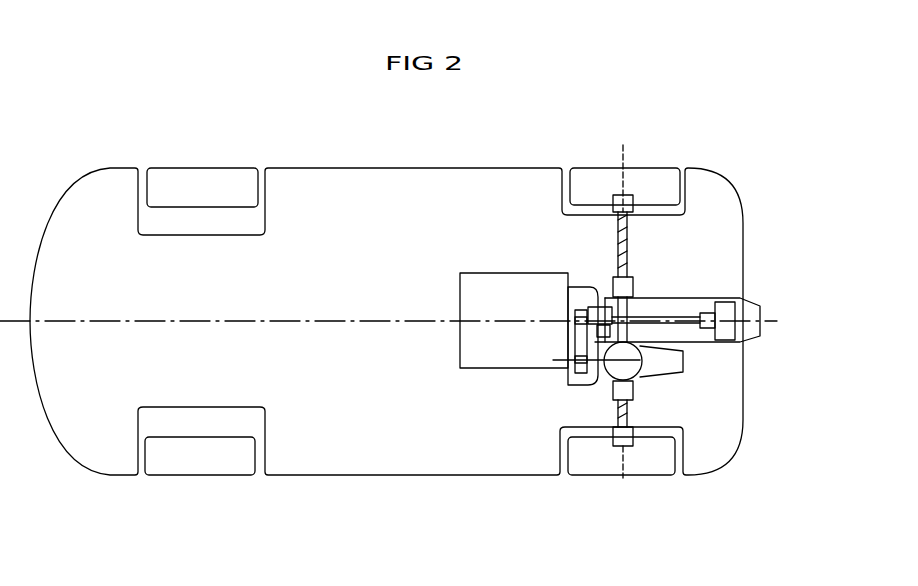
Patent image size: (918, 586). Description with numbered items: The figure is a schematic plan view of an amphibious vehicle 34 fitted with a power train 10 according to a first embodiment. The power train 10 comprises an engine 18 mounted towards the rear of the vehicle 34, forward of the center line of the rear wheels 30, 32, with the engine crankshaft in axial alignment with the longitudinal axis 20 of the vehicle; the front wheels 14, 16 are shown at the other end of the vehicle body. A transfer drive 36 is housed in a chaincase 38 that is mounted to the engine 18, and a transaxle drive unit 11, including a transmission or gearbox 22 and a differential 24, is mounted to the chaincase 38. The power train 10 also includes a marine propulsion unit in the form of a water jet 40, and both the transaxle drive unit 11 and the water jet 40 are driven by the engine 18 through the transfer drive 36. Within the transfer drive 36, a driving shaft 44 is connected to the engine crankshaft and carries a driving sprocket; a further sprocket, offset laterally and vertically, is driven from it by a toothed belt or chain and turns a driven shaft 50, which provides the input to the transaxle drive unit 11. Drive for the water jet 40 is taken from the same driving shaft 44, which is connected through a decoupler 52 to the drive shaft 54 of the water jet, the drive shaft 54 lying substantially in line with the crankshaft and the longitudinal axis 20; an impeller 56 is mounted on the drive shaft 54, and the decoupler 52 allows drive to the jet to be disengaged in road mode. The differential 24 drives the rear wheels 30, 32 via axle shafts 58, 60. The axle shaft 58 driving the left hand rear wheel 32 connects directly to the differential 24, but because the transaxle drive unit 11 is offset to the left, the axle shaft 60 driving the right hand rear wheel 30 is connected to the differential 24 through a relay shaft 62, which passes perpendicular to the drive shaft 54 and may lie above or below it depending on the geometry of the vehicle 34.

The power train 10 is at (467, 258).
The transaxle drive unit 11 is at (672, 382).
The left front wheel 14 is at (173, 178).
The left rear wheel 16 is at (180, 465).
The engine 18 is at (508, 307).
The longitudinal axis 20 is at (124, 320).
The gearbox 22 is at (683, 357).
The differential 24 is at (632, 358).
The right hand rear wheel 30 is at (658, 185).
The left hand rear wheel 32 is at (637, 455).
The amphibious vehicle 34 is at (300, 283).
The transfer drive 36 is at (578, 272).
The chaincase 38 is at (570, 383).
The water jet 40 is at (750, 297).
The driving shaft 44 is at (575, 312).
The driven shaft 50 is at (588, 367).
The decoupler 52 is at (605, 308).
The drive shaft 54 is at (640, 320).
The impeller 56 is at (728, 313).
The axle shaft 58 is at (620, 412).
The axle shaft 60 is at (625, 250).
The relay shaft 62 is at (628, 303).